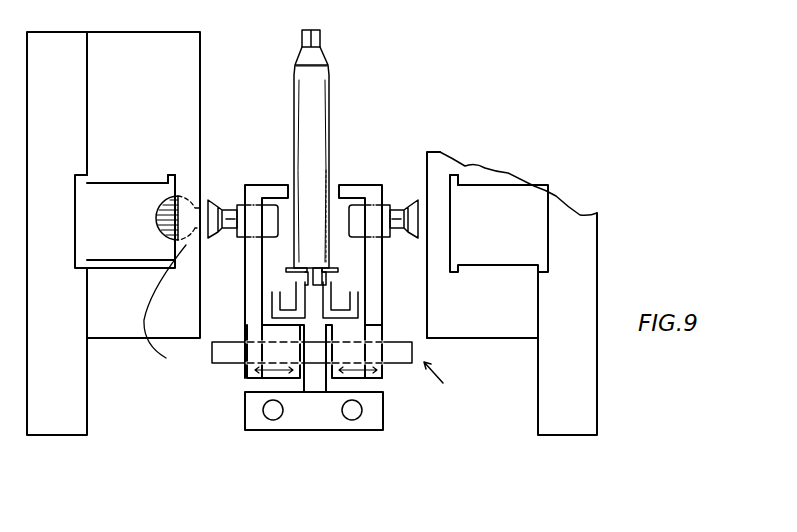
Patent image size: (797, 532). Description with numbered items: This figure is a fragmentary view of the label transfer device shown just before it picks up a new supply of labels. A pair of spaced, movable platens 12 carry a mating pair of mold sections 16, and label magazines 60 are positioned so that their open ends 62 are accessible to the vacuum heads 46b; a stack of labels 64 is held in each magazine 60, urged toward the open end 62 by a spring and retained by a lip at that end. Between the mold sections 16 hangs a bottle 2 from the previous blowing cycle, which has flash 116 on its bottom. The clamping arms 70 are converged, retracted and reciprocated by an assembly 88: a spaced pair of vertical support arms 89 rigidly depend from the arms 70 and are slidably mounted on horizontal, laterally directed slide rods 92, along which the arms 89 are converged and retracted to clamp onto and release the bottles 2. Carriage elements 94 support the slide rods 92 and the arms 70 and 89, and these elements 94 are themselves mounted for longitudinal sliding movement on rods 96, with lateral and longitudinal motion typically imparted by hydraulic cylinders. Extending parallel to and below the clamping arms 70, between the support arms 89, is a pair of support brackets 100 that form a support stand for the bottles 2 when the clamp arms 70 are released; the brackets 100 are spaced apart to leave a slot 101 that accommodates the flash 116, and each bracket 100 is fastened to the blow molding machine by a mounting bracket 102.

The bottles 2 is at (329, 153).
The platens 12 is at (68, 40).
The mold sections 16 is at (146, 42).
The vacuum heads 46b is at (226, 190).
The label magazines 60 is at (128, 182).
The open end 62 is at (178, 178).
The labels 64 is at (155, 218).
The clamping arms 70 is at (256, 190).
The assembly 88 is at (444, 386).
The vertical support arms 89 is at (250, 286).
The slide rods 92 is at (171, 314).
The carriage elements 94 is at (250, 408).
The rods 96 is at (342, 410).
The support brackets 100 is at (290, 270).
The slot 101 is at (317, 278).
The mounting bracket 102 is at (272, 310).
The flash 116 is at (318, 264).